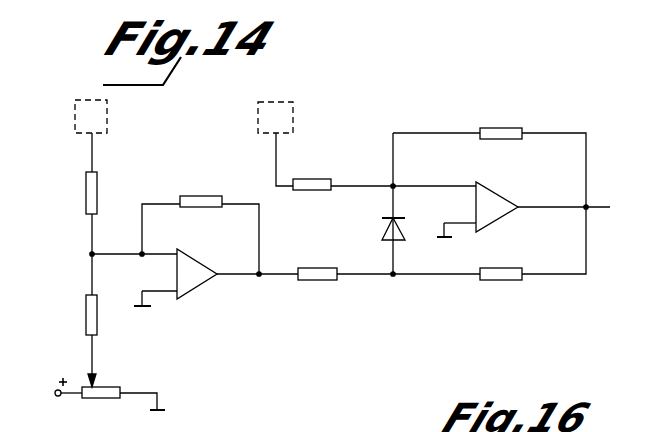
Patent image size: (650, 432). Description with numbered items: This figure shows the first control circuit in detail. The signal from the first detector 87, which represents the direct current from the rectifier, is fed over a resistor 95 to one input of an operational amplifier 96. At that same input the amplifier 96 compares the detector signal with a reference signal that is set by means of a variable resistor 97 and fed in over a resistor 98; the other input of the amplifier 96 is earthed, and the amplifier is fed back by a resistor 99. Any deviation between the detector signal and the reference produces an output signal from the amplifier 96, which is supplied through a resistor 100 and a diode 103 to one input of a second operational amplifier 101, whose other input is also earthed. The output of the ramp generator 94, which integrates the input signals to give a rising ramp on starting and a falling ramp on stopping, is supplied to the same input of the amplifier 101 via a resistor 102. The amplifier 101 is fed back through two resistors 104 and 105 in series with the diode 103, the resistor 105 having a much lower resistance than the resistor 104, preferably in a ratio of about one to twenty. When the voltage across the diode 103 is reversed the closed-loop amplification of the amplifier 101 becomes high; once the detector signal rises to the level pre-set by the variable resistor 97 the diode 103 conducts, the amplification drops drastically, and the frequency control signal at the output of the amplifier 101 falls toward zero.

The first detector 87 is at (108, 128).
The ramp generator 94 is at (294, 128).
The resistor 95 is at (97, 190).
The operational amplifier 96 is at (199, 287).
The variable resistor 97 is at (102, 398).
The resistor 98 is at (97, 325).
The resistor 99 is at (200, 196).
The resistor 100 is at (317, 280).
The operational amplifier 101 is at (489, 227).
The resistor 102 is at (316, 190).
The diode 103 is at (382, 231).
The resistor 104 is at (503, 128).
The resistor 105 is at (500, 280).